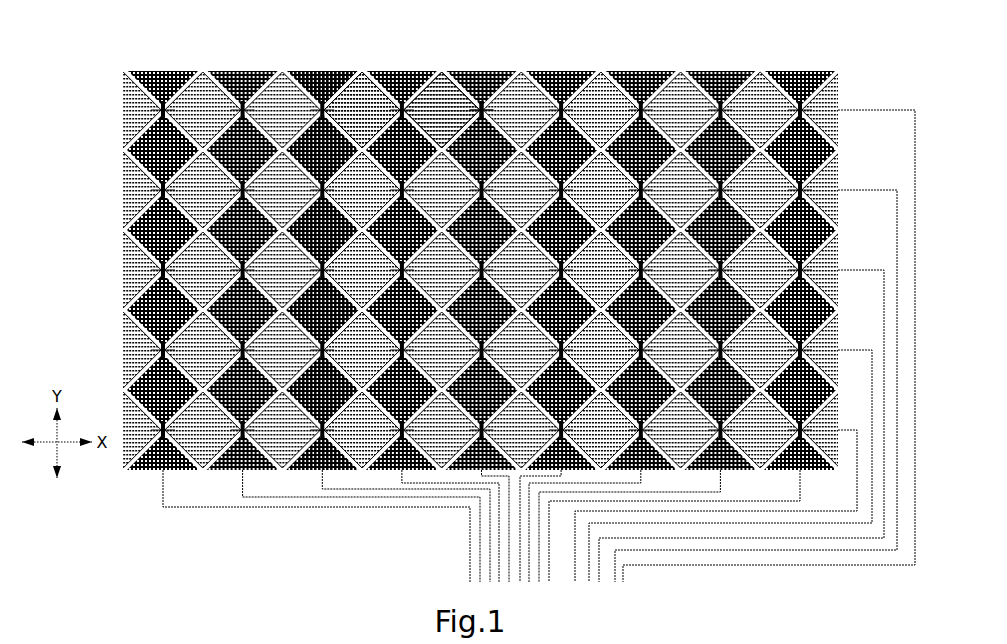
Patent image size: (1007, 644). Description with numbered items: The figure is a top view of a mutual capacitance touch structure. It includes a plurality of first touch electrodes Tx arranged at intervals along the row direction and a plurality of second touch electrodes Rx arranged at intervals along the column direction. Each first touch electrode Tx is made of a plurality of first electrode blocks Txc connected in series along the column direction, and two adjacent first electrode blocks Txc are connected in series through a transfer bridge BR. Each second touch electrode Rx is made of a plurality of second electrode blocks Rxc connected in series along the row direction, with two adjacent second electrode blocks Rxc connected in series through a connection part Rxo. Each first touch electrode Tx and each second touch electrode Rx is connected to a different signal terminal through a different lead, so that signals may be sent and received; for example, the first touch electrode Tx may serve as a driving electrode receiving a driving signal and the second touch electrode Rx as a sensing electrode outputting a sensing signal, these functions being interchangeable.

The second touch electrode Rx is at (313, 29).
The connection part Rxo is at (307, 96).
The second electrode block Rxc is at (362, 88).
The first touch electrode Tx is at (501, 29).
The first electrode block Txc is at (447, 103).
The transfer bridge BR is at (486, 106).